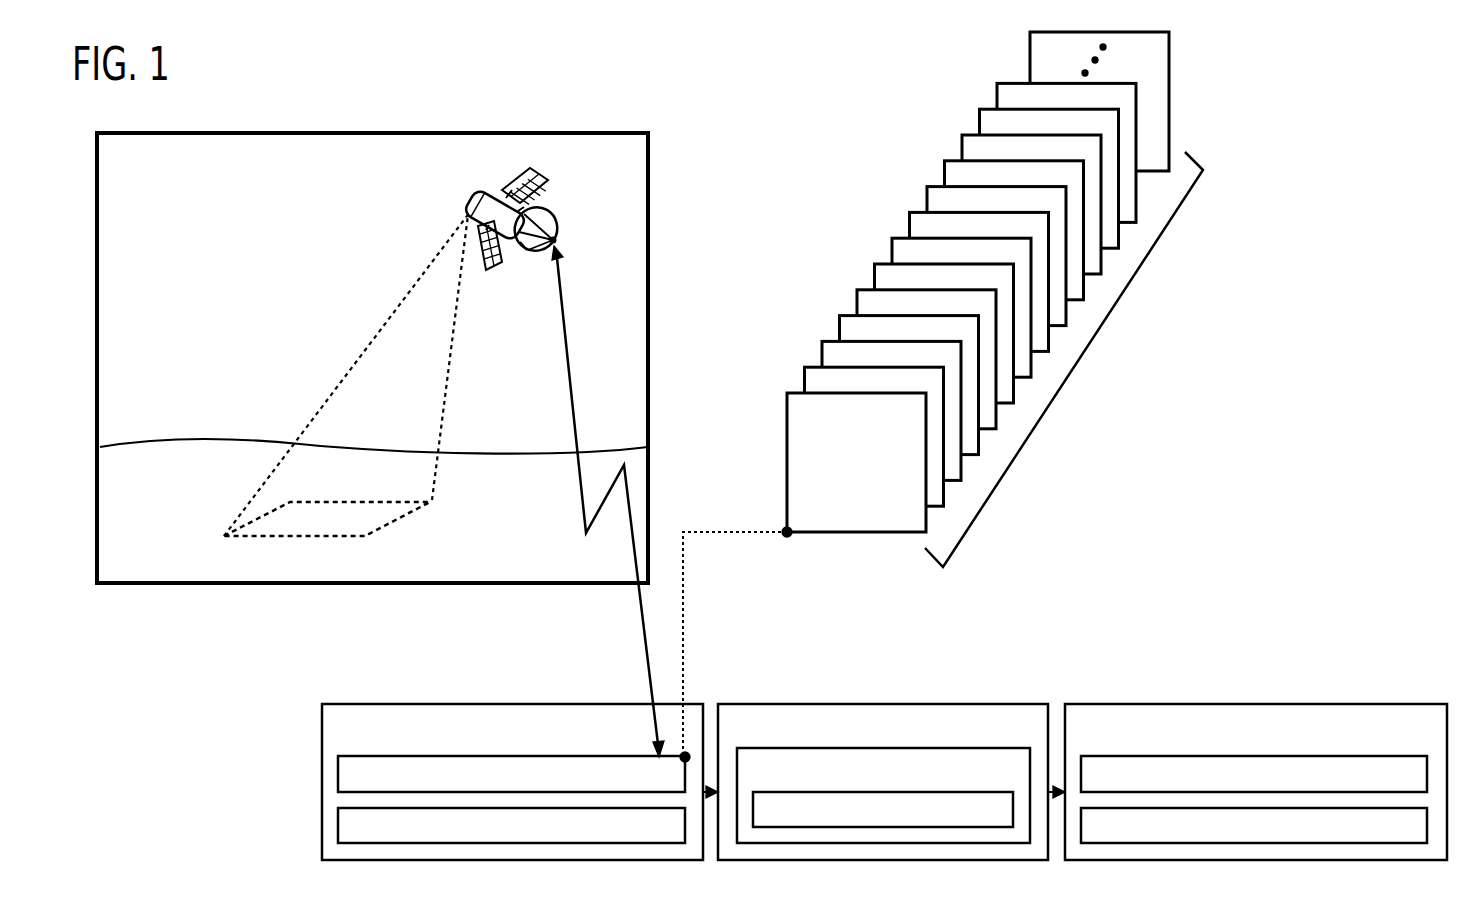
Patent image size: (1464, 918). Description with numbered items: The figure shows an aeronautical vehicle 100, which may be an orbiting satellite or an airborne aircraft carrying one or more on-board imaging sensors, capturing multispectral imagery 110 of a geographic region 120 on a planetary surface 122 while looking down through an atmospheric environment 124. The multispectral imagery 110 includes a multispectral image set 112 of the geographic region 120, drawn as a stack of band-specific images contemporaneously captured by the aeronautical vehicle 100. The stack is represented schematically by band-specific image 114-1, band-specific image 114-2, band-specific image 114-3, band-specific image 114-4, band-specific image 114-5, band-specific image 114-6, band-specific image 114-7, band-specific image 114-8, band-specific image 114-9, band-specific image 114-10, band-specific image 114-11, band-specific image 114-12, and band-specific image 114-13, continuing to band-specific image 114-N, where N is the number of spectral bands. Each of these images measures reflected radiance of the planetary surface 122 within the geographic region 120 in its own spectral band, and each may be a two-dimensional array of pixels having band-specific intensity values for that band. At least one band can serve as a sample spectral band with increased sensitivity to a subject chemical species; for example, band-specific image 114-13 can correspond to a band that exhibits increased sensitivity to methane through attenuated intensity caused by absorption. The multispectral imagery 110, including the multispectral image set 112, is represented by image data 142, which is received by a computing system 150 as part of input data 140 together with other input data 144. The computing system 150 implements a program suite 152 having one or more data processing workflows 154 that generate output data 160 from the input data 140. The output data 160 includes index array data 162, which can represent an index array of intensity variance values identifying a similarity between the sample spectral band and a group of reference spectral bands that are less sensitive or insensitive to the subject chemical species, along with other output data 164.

The aeronautical vehicle 100 is at (485, 202).
The multispectral imagery 110 is at (930, 310).
The multispectral image set 112 is at (1064, 359).
The band-specific image 114-1 is at (787, 403).
The band-specific image 114-2 is at (804, 377).
The band-specific image 114-3 is at (822, 351).
The band-specific image 114-4 is at (840, 326).
The band-specific image 114-5 is at (857, 300).
The band-specific image 114-6 is at (874, 274).
The band-specific image 114-7 is at (892, 248).
The band-specific image 114-8 is at (910, 222).
The band-specific image 114-9 is at (927, 197).
The band-specific image 114-10 is at (944, 171).
The band-specific image 114-11 is at (962, 145).
The band-specific image 114-12 is at (980, 119).
The band-specific image 114-13 is at (997, 93).
The band-specific image 114-N is at (1030, 42).
The geographic region 120 is at (328, 516).
The planetary surface 122 is at (185, 438).
The atmospheric environment 124 is at (346, 328).
The input data 140 is at (587, 739).
The image data 142 is at (587, 784).
The other input data 144 is at (620, 836).
The computing system 150 is at (1000, 737).
The program suite 152 is at (980, 781).
The data processing workflows 154 is at (963, 819).
The output data 160 is at (1338, 737).
The index array data 162 is at (1363, 784).
The other output data 164 is at (1373, 836).